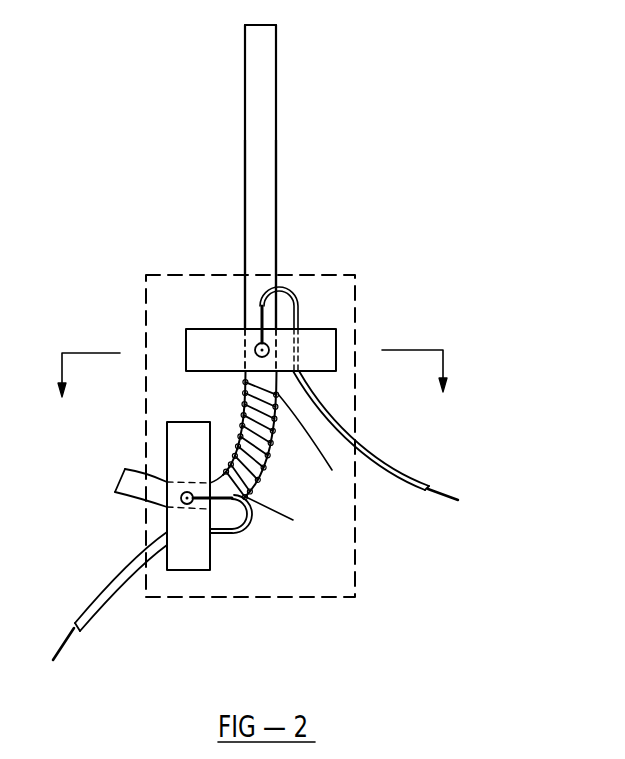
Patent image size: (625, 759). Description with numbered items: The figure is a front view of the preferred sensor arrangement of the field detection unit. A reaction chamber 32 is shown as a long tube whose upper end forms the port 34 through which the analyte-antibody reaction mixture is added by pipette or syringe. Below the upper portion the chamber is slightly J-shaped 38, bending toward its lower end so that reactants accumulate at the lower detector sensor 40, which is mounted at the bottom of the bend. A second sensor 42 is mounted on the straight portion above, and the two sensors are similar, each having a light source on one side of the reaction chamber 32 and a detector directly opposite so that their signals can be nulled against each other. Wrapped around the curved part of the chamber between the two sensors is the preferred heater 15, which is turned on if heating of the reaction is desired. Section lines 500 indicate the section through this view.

The heater 15 is at (295, 472).
The reaction chamber 32 is at (275, 207).
The port 34 is at (262, 102).
The J-shape 38 is at (342, 563).
The lower detector sensor 40 is at (195, 572).
The sensor 42 is at (268, 347).
The section line 500 is at (257, 397).